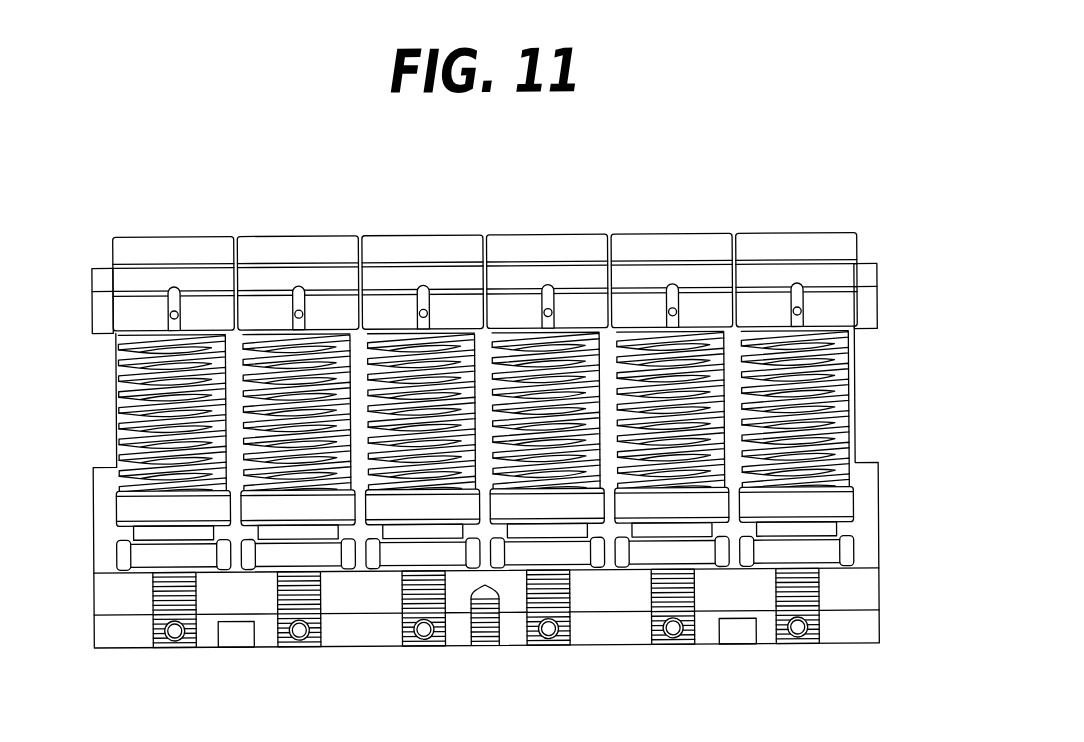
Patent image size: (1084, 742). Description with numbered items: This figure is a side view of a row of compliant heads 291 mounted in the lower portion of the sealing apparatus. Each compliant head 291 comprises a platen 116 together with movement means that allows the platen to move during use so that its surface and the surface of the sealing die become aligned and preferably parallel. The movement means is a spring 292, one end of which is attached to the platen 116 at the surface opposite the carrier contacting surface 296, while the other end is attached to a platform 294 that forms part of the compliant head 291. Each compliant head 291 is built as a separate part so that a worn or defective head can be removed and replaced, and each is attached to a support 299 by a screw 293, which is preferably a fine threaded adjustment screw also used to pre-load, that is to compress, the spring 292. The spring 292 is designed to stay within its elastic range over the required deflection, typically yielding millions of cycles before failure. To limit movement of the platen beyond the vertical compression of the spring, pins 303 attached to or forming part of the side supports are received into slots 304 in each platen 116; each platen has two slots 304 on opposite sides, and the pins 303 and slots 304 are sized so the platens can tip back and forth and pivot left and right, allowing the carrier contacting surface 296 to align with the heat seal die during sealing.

The compliant head 291 is at (745, 155).
The spring 292 is at (840, 401).
The screw 293 is at (527, 646).
The platform 294 is at (803, 507).
The carrier contacting surface 296 is at (172, 235).
The support 299 is at (848, 627).
The pin 303 is at (300, 312).
The slot 304 is at (800, 290).
The platen 116 is at (665, 248).